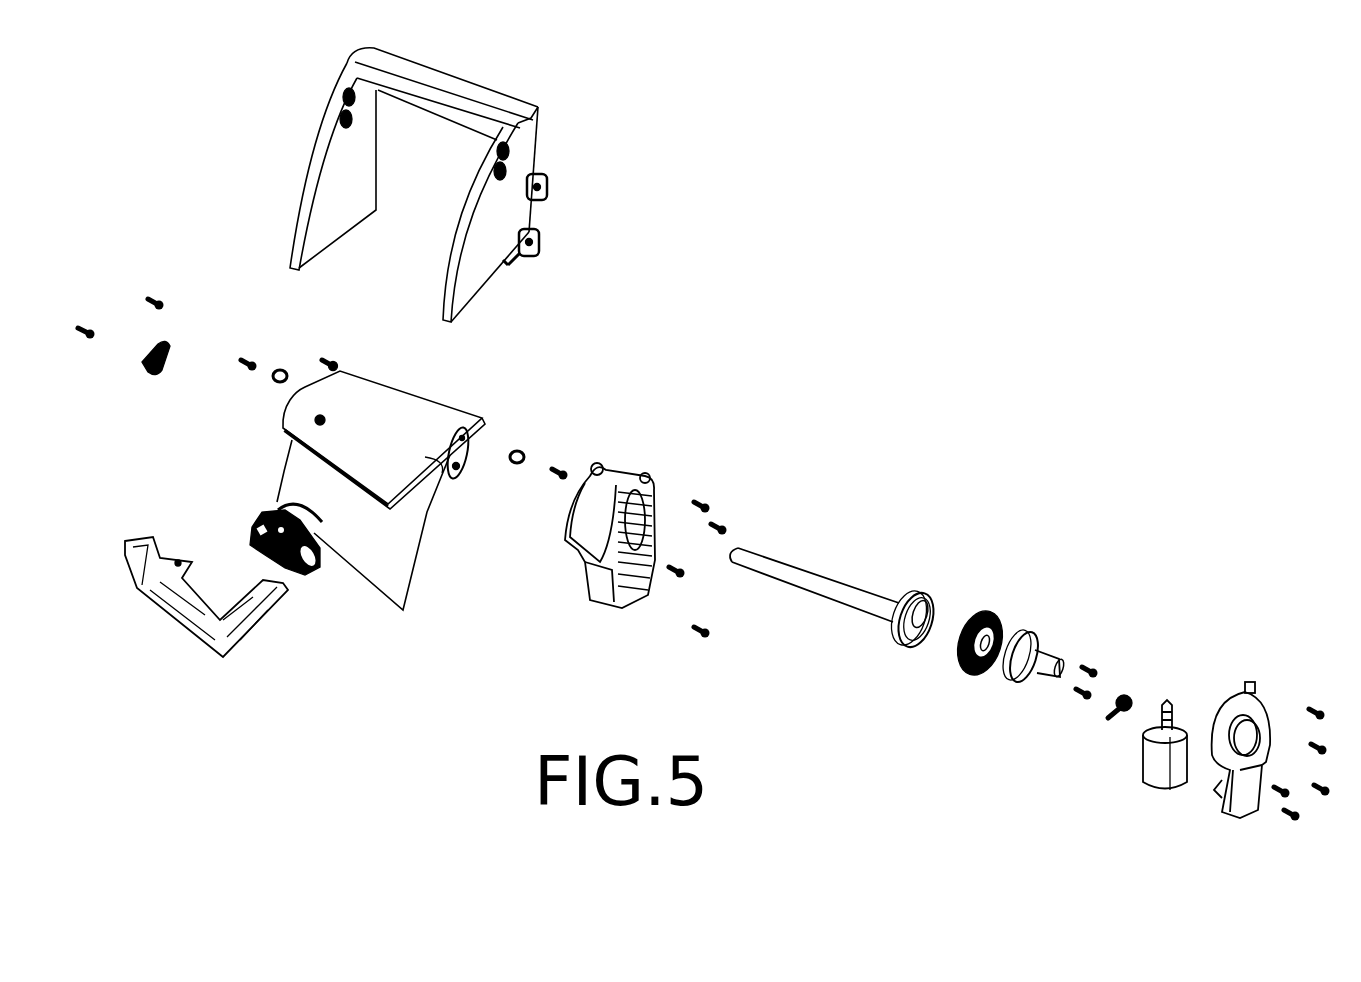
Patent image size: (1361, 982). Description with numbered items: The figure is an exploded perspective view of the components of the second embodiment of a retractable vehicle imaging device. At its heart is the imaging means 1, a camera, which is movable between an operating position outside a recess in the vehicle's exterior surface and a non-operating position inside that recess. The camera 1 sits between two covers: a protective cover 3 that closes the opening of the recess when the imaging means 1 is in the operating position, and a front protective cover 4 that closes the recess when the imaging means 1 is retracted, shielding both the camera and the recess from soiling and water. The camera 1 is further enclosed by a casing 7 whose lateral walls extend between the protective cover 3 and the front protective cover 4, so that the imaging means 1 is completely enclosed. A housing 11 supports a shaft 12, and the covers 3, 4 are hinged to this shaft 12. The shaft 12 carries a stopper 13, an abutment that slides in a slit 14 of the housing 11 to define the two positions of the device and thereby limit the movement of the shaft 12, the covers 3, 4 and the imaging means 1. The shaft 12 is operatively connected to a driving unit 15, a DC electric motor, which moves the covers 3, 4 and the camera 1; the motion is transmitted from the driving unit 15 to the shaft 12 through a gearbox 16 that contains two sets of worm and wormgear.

The imaging means 1 is at (315, 573).
The protective cover 3 is at (422, 512).
The front protective cover 4 is at (438, 413).
The casing 7 is at (145, 552).
The housing 11 is at (531, 118).
The shaft 12 is at (869, 601).
The stopper 13 is at (150, 376).
The slit 14 is at (508, 155).
The driving unit 15 is at (1158, 768).
The gearbox 16 is at (1112, 540).